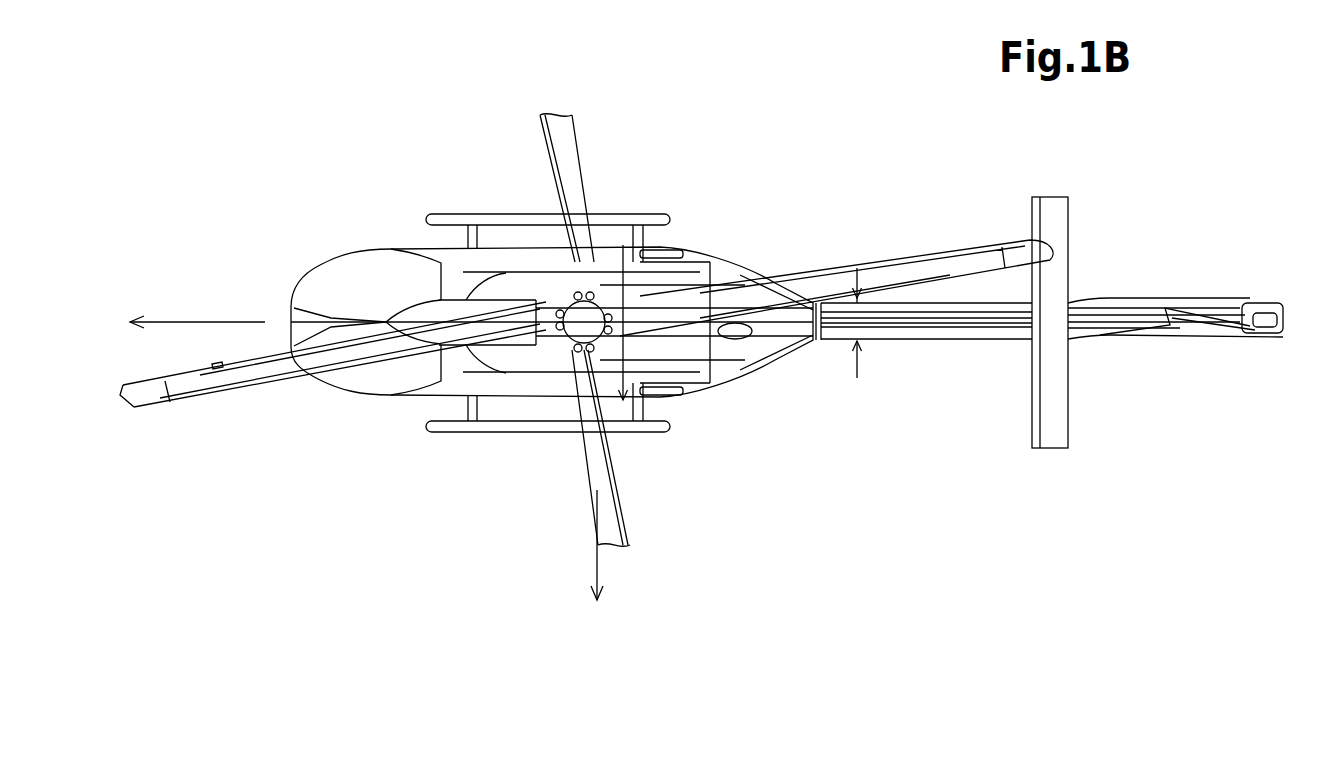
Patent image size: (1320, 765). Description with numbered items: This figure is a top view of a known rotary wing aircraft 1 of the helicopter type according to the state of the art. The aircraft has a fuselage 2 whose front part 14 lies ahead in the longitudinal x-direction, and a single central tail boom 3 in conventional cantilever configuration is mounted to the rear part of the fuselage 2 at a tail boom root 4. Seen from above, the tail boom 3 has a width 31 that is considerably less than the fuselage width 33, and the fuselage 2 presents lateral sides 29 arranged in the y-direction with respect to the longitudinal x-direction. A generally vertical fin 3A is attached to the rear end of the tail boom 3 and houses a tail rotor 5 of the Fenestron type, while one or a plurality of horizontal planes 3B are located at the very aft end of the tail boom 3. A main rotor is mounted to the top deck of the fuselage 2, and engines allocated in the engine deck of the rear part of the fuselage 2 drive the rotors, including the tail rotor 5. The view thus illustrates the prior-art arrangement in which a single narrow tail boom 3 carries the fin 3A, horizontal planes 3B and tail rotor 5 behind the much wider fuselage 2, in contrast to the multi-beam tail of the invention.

The rotary wing aircraft 1 is at (331, 180).
The fuselage 2 is at (712, 395).
The single central tail boom 3 is at (902, 348).
The fin 3A is at (1192, 303).
The horizontal plane 3B is at (1067, 225).
The tail boom root 4 is at (822, 349).
The tail rotor 5 is at (1192, 337).
The front part 14 is at (291, 287).
The lateral sides 29 is at (657, 243).
The width 31 is at (857, 262).
The fuselage width 33 is at (623, 245).